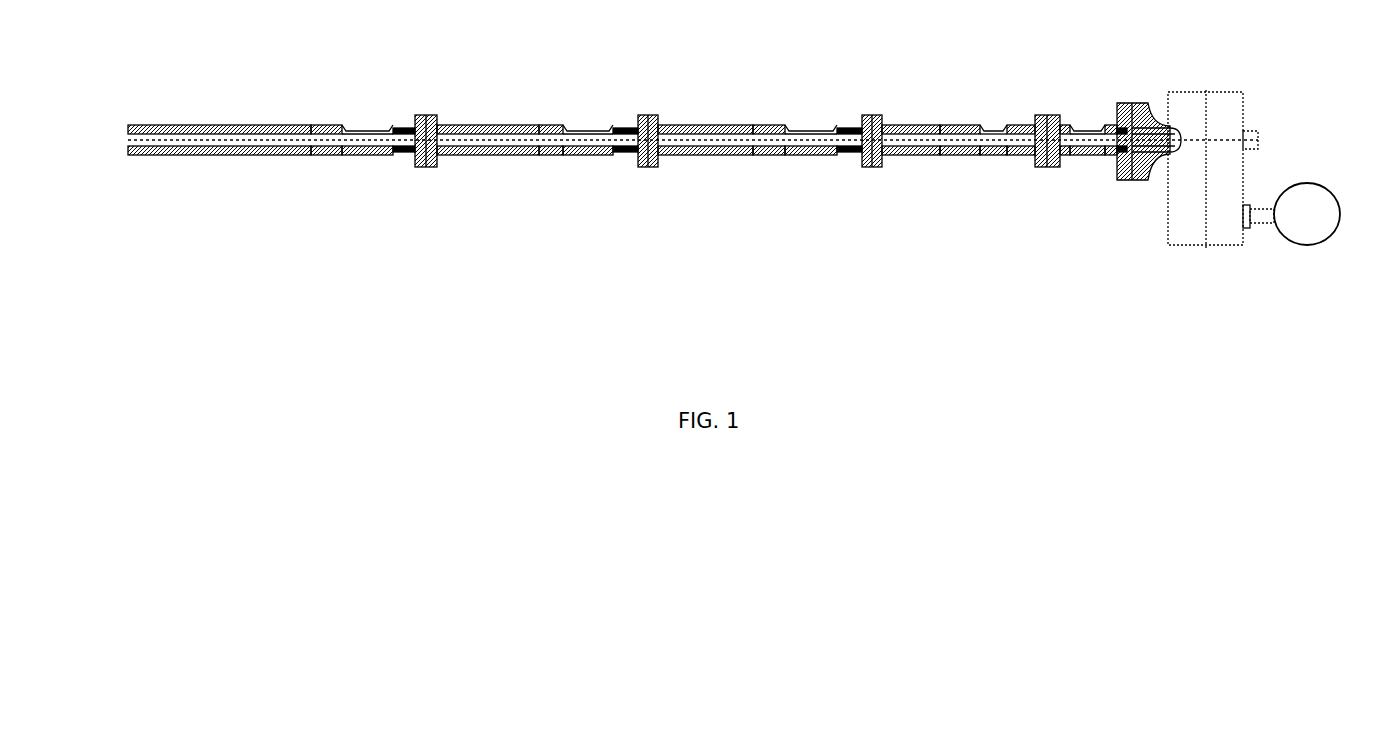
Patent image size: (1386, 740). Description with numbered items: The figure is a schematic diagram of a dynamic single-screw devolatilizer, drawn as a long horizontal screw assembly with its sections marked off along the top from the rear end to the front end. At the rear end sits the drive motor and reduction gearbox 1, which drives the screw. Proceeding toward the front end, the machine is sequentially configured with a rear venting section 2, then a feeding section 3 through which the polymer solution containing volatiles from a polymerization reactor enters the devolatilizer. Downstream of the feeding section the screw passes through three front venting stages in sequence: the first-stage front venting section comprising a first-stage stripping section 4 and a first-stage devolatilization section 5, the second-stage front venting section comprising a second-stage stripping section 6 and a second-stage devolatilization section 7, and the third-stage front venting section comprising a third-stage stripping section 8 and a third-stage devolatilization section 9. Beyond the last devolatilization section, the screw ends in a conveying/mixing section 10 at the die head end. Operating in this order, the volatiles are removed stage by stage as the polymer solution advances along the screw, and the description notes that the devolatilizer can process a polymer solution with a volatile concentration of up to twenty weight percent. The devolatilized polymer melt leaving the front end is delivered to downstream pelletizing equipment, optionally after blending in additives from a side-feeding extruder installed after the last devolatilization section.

The drive motor and reduction gearbox 1 is at (1118, 110).
The rear venting section 2 is at (1043, 110).
The feeding section 3 is at (940, 110).
The first-stage stripping section 4 is at (879, 110).
The first-stage devolatilization section 5 is at (753, 110).
The second-stage stripping section 6 is at (657, 110).
The second-stage devolatilization section 7 is at (539, 110).
The third-stage stripping section 8 is at (434, 110).
The third-stage devolatilization section 9 is at (311, 110).
The conveying/mixing section 10 is at (129, 110).